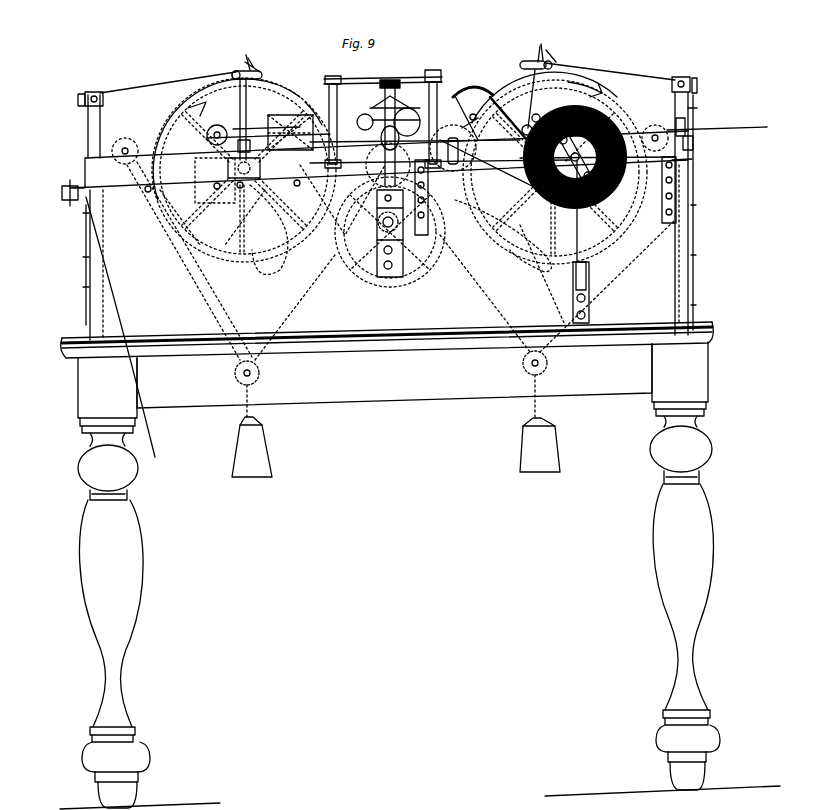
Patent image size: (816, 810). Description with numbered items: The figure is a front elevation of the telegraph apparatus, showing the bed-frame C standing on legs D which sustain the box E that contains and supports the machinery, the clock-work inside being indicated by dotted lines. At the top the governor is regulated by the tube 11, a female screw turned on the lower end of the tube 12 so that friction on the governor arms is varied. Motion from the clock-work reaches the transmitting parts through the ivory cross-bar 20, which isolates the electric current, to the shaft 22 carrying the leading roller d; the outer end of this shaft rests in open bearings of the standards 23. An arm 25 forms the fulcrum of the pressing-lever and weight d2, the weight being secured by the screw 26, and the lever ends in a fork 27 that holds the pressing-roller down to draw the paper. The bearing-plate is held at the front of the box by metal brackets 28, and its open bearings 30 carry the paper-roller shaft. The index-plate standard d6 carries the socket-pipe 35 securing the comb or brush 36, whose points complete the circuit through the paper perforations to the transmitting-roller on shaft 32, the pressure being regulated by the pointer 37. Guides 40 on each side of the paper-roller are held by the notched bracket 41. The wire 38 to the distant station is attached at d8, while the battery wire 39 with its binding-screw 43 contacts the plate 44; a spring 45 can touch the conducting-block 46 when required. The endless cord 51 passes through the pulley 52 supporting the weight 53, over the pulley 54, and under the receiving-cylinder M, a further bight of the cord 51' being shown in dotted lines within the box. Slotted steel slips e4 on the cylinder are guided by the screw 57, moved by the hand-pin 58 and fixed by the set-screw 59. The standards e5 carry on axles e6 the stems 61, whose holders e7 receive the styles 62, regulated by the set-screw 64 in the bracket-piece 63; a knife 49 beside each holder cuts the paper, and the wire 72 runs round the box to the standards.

The bed-frame C is at (387, 365).
The legs D is at (420, 575).
The box E is at (390, 242).
The receiving-cylinder M is at (399, 166).
The tube 11 is at (384, 99).
The tube 12 is at (380, 85).
The cross-bar 20 is at (415, 125).
The shaft 22 is at (380, 233).
The standards 23 is at (408, 136).
The arm 25 is at (206, 139).
The screw 26 is at (296, 112).
The fork 27 is at (365, 122).
The metal brackets 28 is at (428, 196).
The open bearings 30 is at (597, 157).
The shaft 32 is at (453, 148).
The socket-pipe 35 is at (481, 116).
The comb or brush 36 is at (468, 125).
The pointer 37 is at (473, 113).
The wire 38 is at (697, 136).
The wire 39 is at (124, 318).
The guides 40 is at (578, 242).
The bracket 41 is at (589, 278).
The binding-screw 43 is at (65, 196).
The plate 44 is at (379, 164).
The spring 45 is at (693, 142).
The conducting-block 46 is at (692, 158).
The knife 49 is at (233, 73).
The endless cord or band 51 is at (401, 290).
The belt 51' is at (400, 230).
The pulley 52 is at (259, 376).
The weight 53 is at (396, 447).
The pulley 54 is at (142, 143).
The guide and steady screw 57 is at (244, 168).
The hand-pin 58 is at (390, 127).
The guide and set-screw 59 is at (218, 129).
The stems 61 is at (387, 80).
The styles 62 is at (378, 113).
The bracket-piece 63 is at (258, 66).
The set-screw 64 is at (398, 51).
The wire 72 is at (86, 282).
The leading roller d is at (440, 165).
The pressing-lever and weight d2 is at (412, 117).
The index-plate standard d6 is at (500, 161).
The binding-screw connection d8 is at (670, 123).
The slotted steel slips e4 is at (380, 118).
The standards e5 is at (222, 189).
The axles e6 is at (701, 108).
The holders e7 is at (262, 76).